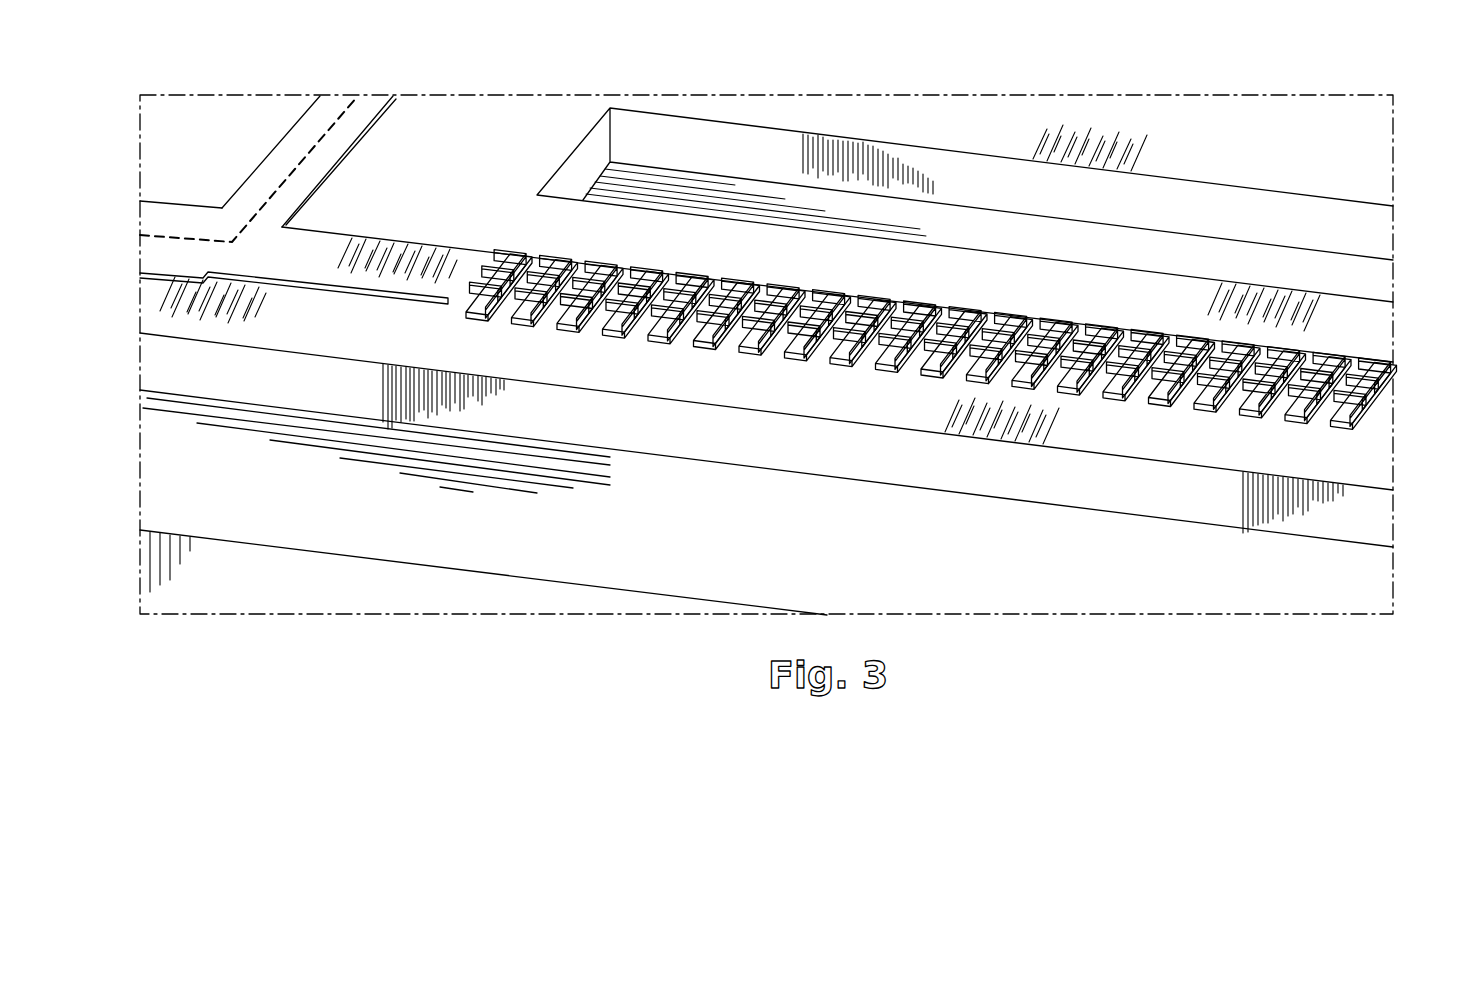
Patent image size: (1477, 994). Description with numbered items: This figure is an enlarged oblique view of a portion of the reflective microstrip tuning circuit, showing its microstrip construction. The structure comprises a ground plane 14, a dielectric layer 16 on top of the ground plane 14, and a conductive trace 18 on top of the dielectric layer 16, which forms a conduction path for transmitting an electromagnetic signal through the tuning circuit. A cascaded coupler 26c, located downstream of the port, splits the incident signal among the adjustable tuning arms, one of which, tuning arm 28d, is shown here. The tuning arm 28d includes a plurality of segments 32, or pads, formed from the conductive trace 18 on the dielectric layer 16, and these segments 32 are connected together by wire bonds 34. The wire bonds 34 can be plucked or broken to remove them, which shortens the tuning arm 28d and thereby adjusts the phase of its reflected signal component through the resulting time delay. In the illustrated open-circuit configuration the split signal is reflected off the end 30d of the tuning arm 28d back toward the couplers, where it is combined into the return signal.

The ground plane 14 is at (314, 517).
The dielectric layer 16 is at (176, 368).
The conductive trace 18 is at (240, 261).
The cascaded coupler 26c is at (338, 133).
The tuning arm 28d is at (1136, 428).
The end of tuning arm 30d is at (966, 367).
The segments 32 is at (612, 331).
The wire bonds 34 is at (640, 298).